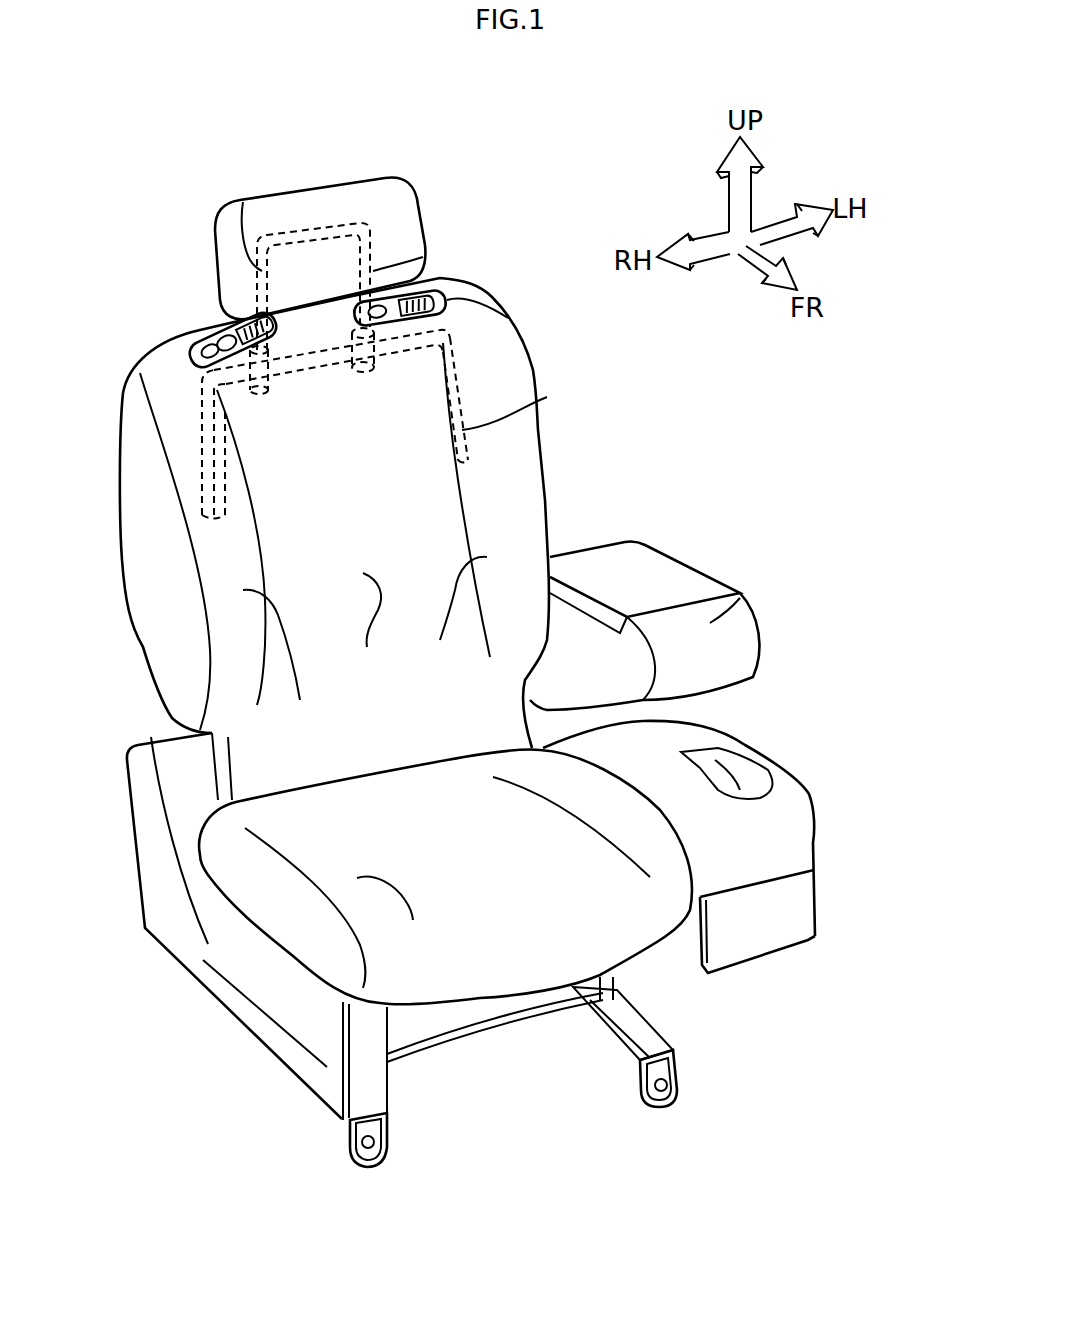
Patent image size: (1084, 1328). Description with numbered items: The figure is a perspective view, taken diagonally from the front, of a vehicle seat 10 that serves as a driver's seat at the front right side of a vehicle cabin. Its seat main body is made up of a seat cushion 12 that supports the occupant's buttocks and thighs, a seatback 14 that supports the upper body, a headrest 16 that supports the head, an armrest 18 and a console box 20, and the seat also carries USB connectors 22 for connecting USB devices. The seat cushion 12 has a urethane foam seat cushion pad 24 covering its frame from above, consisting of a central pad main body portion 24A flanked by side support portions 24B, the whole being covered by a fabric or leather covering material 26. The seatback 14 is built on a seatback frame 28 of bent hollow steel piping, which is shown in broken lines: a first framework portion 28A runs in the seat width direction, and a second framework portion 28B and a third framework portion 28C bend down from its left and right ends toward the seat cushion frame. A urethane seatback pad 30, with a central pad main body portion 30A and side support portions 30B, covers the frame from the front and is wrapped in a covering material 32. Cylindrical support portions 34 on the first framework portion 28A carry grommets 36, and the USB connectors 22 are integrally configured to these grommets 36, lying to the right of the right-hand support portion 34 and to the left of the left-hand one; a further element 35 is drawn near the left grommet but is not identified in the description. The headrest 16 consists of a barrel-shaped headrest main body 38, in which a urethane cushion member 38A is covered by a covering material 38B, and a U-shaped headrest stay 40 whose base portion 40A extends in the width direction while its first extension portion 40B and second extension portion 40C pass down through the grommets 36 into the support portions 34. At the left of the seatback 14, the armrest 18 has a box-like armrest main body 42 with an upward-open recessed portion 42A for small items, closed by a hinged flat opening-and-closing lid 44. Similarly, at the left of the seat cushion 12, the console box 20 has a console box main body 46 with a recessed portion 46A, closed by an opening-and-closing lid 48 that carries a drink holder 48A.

The vehicle seat 10 is at (660, 458).
The seat cushion 12 is at (245, 925).
The seatback 14 is at (548, 367).
The headrest 16 is at (432, 231).
The armrest 18 is at (768, 633).
The console box 20 is at (828, 841).
The USB connectors 22 is at (210, 360).
The seat cushion pad 24 is at (598, 1113).
The pad main body portion 24A is at (490, 852).
The side support portions 24B is at (600, 800).
The covering material 26 is at (663, 944).
The seatback frame 28 is at (228, 468).
The first framework portion 28A is at (313, 367).
The second framework portion 28B is at (185, 437).
The third framework portion 28C is at (547, 397).
The seatback pad 30 is at (273, 683).
The pad main body portion 30A is at (380, 626).
The side support portions 30B is at (365, 628).
The covering material 32 is at (130, 620).
The support portions 34 is at (260, 393).
The headrest lock knob 35 is at (212, 343).
The grommets 36 is at (430, 277).
The headrest main body 38 is at (510, 77).
The cushion member 38A is at (420, 183).
The covering material 38B is at (392, 203).
The headrest stay 40 is at (322, 214).
The base portion 40A is at (261, 236).
The first extension portion 40B is at (241, 212).
The second extension portion 40C is at (373, 270).
The armrest main body 42 is at (763, 667).
The recessed portion 42A is at (737, 577).
The opening-and-closing lid 44 is at (690, 560).
The console box main body 46 is at (817, 908).
The recessed portion 46A is at (756, 916).
The opening-and-closing lid 48 is at (813, 795).
The drink holder 48A is at (757, 778).